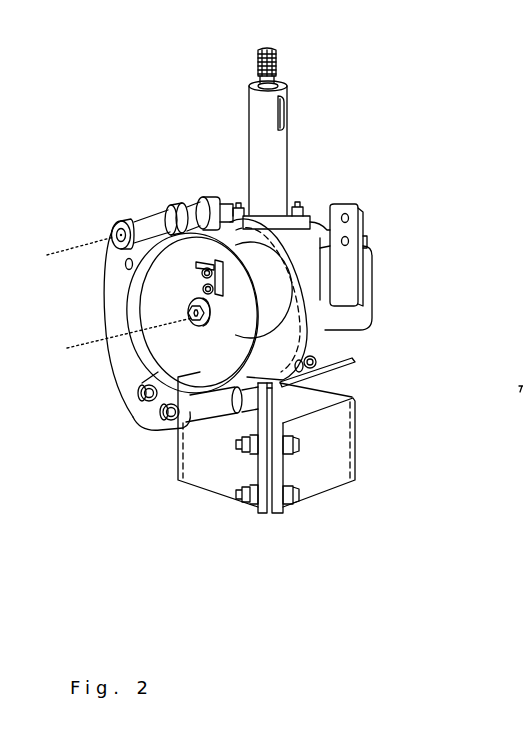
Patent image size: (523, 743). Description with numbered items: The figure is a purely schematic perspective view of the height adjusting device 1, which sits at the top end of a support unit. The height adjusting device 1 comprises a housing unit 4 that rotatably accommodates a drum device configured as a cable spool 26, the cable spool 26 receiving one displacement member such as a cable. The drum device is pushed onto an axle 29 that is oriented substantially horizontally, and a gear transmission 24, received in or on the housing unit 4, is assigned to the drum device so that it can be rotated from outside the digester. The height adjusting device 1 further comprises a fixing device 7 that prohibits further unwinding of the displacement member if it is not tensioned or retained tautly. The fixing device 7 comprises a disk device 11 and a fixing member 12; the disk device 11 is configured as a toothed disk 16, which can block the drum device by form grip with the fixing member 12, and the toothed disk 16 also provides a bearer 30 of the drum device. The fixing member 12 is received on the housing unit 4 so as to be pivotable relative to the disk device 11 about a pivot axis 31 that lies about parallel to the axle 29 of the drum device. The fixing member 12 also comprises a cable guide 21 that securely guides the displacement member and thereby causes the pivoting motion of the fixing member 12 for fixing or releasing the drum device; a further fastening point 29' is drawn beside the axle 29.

The height adjusting device 1 is at (115, 62).
The fixing device 7 is at (178, 186).
The disk device 11 is at (262, 245).
The gear transmission 24 is at (275, 155).
The housing unit 4 is at (315, 233).
The pivot axis 31 is at (90, 240).
The fixing member 12 is at (108, 276).
The cable spool 26 is at (159, 296).
The second fastening bolt 29' is at (108, 380).
The axle 29 is at (119, 390).
The cable guide 21 is at (163, 403).
The toothed disk 16 is at (292, 310).
The bearer 30 is at (280, 343).